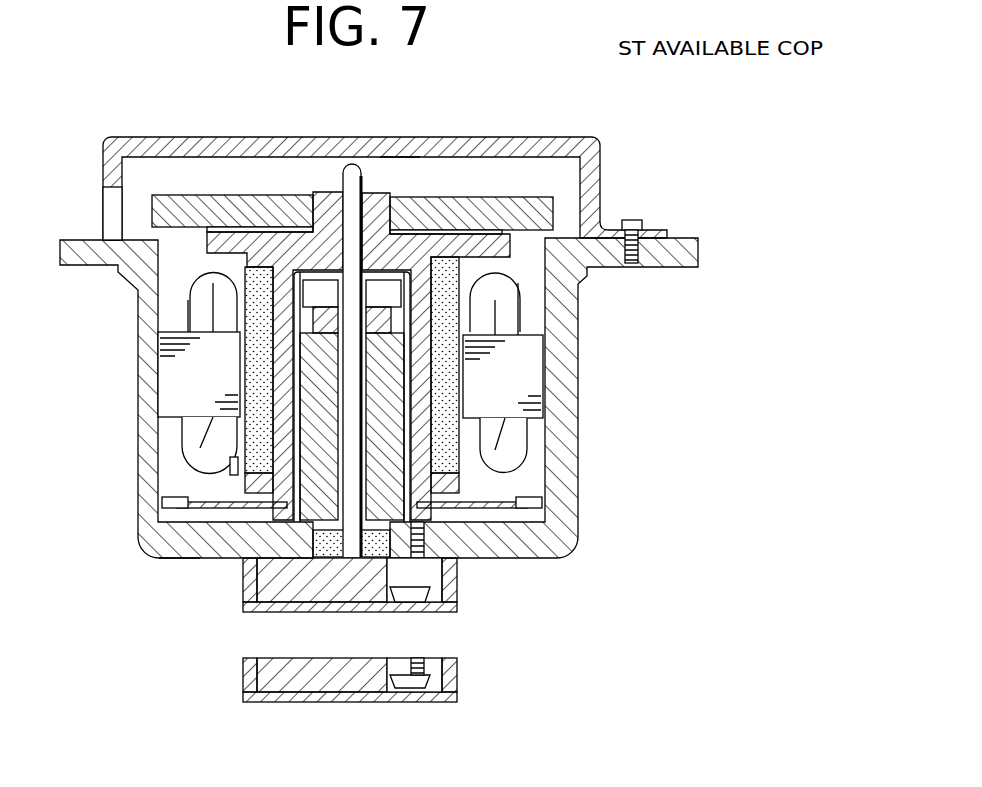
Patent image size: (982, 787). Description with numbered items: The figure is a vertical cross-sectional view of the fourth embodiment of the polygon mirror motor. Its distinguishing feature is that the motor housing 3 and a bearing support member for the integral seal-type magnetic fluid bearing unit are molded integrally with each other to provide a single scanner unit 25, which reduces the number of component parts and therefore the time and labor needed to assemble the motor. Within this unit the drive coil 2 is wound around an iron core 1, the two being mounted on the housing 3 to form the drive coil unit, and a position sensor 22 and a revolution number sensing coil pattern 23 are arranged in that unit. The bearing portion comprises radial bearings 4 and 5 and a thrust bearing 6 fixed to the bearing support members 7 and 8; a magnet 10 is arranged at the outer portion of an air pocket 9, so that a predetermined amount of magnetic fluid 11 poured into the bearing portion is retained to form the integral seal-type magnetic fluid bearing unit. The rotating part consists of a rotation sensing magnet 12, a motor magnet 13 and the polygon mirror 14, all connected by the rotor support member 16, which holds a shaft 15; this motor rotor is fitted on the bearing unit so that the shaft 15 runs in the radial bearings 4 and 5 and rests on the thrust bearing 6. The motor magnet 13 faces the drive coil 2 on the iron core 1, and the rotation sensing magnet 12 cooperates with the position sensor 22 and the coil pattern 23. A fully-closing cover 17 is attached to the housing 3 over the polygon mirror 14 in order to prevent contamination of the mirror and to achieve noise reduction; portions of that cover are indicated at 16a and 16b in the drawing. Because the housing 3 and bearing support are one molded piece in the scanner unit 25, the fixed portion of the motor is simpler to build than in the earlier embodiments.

The iron core 1 is at (167, 397).
The drive coil 2 is at (193, 314).
The housing 3 is at (160, 500).
The radial bearing 4 is at (297, 240).
The radial bearing 5 is at (382, 662).
The thrust bearing 6 is at (387, 570).
The bearing support member 7 is at (245, 640).
The bearing support member 8 is at (330, 598).
The air pocket 9 is at (483, 200).
The magnet 10 is at (458, 232).
The magnetic fluid 11 is at (500, 230).
The rotation sensing magnet 12 is at (455, 483).
The motor magnet 13 is at (453, 448).
The polygon mirror 14 is at (207, 198).
The shaft 15 is at (350, 163).
The rotor support member 16 is at (233, 230).
The cover inner wall 16a is at (399, 158).
The cover lip 16b is at (200, 232).
The fully-closing cover 17 is at (372, 192).
The position sensor 22 is at (222, 472).
The revolution number sensing coil pattern 23 is at (163, 558).
The scanner unit 25 is at (572, 343).